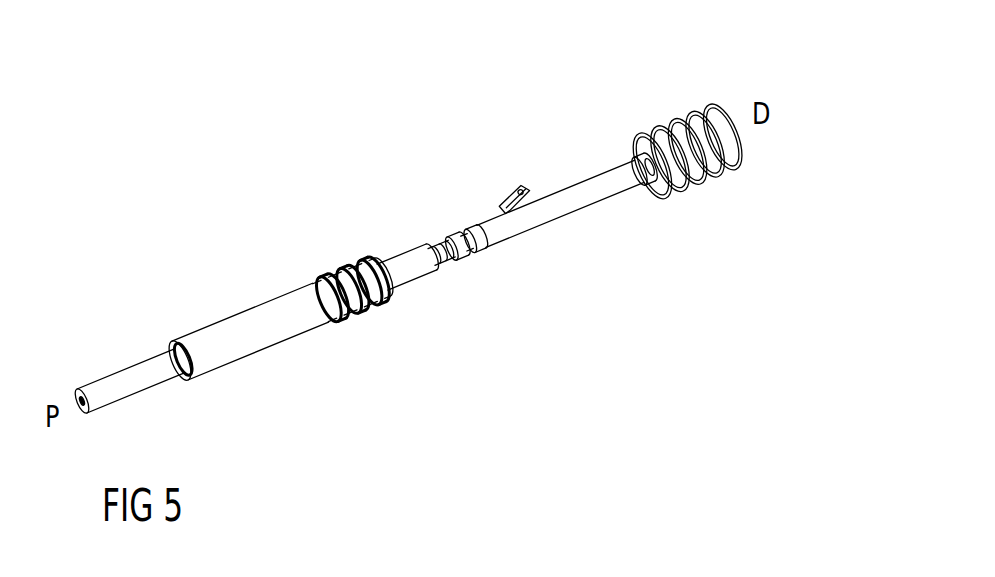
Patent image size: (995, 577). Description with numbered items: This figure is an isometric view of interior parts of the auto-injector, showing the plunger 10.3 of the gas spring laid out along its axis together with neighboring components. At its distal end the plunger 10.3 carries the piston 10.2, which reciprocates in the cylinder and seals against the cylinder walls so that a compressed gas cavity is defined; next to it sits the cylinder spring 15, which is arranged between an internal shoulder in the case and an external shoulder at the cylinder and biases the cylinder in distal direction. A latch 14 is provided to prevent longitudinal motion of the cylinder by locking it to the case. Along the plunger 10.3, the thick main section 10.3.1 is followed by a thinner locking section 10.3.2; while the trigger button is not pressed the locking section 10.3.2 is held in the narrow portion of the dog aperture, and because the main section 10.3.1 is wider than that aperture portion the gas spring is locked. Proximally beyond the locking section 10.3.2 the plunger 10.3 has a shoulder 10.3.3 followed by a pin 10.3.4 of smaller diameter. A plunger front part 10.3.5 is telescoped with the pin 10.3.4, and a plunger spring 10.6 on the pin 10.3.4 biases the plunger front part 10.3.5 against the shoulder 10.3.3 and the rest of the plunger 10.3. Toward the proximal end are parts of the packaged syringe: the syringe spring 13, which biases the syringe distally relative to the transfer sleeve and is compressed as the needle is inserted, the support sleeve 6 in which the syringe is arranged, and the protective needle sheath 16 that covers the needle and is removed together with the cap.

The support sleeve 6 is at (232, 330).
The syringe spring 13 is at (330, 275).
The latch 14 is at (523, 187).
The cylinder spring 15 is at (660, 125).
The protective needle sheath 16 is at (132, 375).
The piston 10.2 is at (670, 190).
The plunger 10.3 is at (512, 228).
The main section 10.3.1 is at (583, 197).
The locking section 10.3.2 is at (470, 232).
The shoulder 10.3.3 is at (468, 257).
The pin 10.3.4 is at (440, 260).
The plunger front part 10.3.5 is at (397, 277).
The plunger spring 10.6 is at (433, 248).